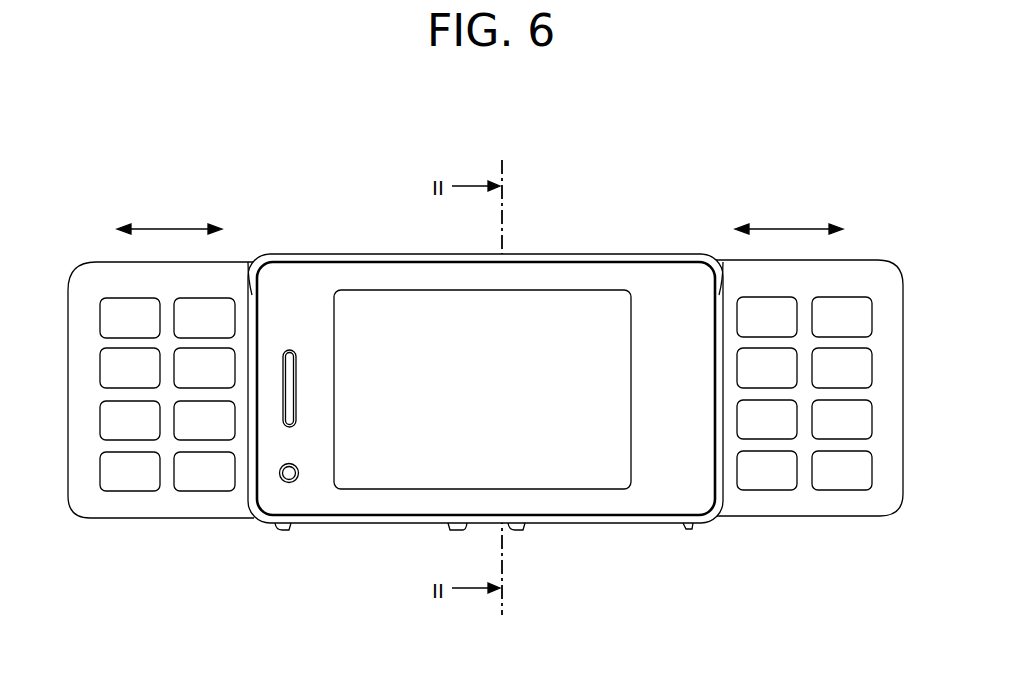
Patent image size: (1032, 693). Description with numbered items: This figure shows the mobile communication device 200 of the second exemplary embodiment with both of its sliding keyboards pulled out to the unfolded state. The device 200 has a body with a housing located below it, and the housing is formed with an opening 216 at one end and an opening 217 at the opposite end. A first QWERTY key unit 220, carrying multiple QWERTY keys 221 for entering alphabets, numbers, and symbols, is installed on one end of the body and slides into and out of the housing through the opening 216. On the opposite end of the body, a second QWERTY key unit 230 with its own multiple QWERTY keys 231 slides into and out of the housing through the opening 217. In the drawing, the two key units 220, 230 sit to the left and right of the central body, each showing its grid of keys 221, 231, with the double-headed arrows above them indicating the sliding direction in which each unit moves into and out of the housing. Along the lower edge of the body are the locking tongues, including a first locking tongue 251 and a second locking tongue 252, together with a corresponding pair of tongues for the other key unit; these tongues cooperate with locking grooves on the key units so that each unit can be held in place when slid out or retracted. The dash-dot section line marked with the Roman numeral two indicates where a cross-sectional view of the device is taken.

The mobile communication device 200 is at (650, 188).
The opening 216 is at (724, 296).
The opening 217 is at (248, 292).
The first QWERTY key unit 220 is at (783, 503).
The QWERTY keys 221 is at (845, 476).
The second QWERTY key unit 230 is at (101, 503).
The QWERTY keys 231 is at (197, 478).
The first locking tongue 251 is at (522, 528).
The second locking tongue 252 is at (690, 526).